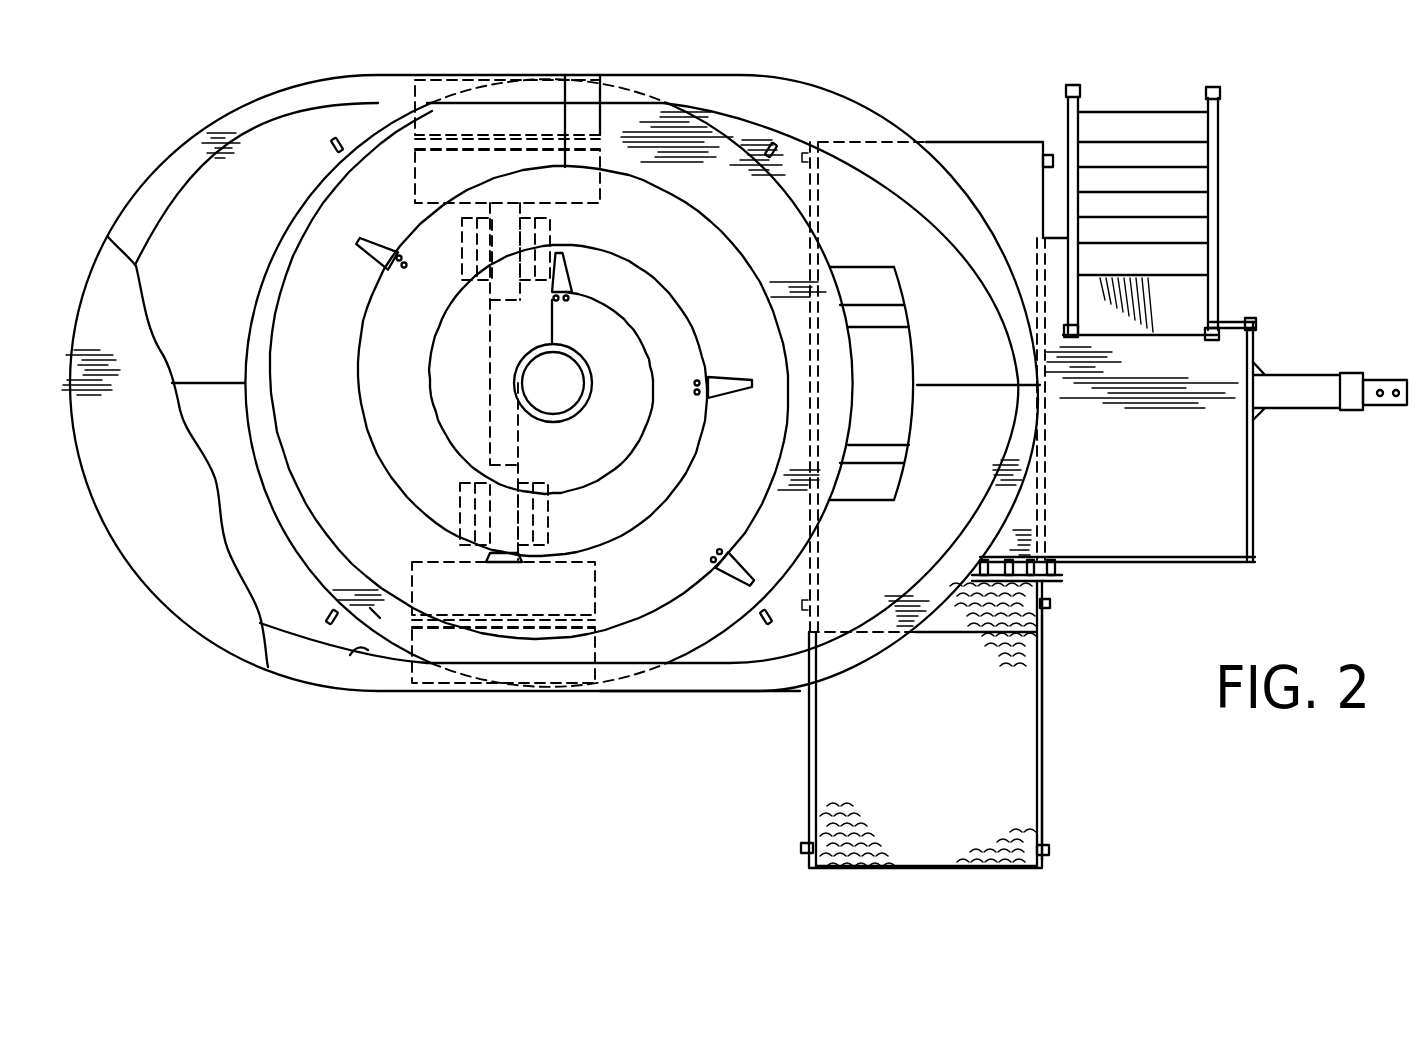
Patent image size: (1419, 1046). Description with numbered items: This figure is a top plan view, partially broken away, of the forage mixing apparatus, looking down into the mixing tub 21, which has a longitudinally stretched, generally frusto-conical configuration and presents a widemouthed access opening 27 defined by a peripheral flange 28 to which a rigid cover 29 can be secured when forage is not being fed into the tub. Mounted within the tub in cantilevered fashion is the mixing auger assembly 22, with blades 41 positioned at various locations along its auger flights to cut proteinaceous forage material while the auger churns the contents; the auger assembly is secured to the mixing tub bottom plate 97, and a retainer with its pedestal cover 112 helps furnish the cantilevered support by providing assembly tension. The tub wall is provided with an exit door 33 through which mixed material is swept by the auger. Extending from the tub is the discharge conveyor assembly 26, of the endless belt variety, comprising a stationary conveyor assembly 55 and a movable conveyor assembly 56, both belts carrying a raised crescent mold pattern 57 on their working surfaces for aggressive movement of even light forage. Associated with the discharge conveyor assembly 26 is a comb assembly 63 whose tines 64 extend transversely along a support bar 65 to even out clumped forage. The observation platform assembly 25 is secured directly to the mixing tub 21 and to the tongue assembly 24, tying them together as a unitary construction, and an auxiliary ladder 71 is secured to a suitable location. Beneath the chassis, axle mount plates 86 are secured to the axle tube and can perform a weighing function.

The mixing tub 21 is at (888, 122).
The mixing auger assembly 22 is at (234, 329).
The tongue assembly 24 is at (1285, 374).
The observation platform assembly 25 is at (1260, 316).
The discharge conveyor assembly 26 is at (1052, 649).
The access opening 27 is at (355, 652).
The peripheral flange 28 is at (707, 678).
The rigid cover 29 is at (153, 468).
The exit door 33 is at (899, 394).
The blades 41 is at (372, 250).
The stationary conveyor assembly 55 is at (960, 142).
The movable conveyor assembly 56 is at (1043, 750).
The crescent mold pattern 57 is at (828, 798).
The comb assembly 63 is at (1070, 580).
The tines 64 is at (985, 562).
The support bar 65 is at (1052, 604).
The auxiliary ladder 71 is at (1216, 215).
The axle mount plates 86 is at (545, 235).
The mixing tub bottom plate 97 is at (375, 613).
The pedestal cover 112 is at (572, 395).